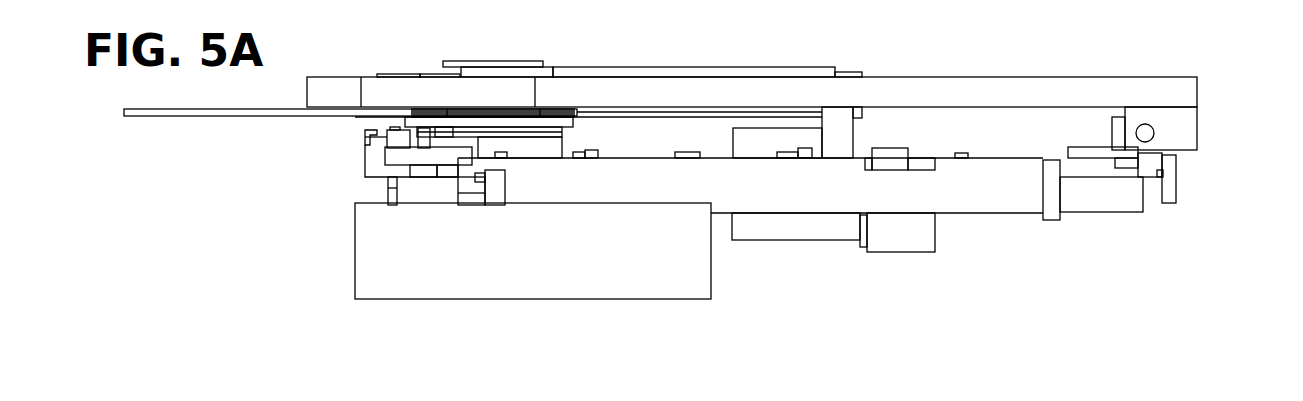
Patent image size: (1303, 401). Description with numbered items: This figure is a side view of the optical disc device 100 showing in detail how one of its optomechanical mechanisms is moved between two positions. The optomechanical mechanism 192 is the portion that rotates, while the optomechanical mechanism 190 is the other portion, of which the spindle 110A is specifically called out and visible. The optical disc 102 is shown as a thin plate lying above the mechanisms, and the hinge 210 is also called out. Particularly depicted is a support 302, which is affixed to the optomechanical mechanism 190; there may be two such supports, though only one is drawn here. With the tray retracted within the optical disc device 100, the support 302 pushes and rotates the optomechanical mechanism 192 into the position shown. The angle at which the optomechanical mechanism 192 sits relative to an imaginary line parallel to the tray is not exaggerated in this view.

The optical disc device 100 is at (280, 264).
The optical disc 102 is at (187, 116).
The spindle 110A is at (572, 119).
The optomechanical mechanism 190 is at (987, 198).
The optomechanical mechanism 192 is at (1067, 92).
The hinge 210 is at (1154, 133).
The support 302 is at (838, 122).